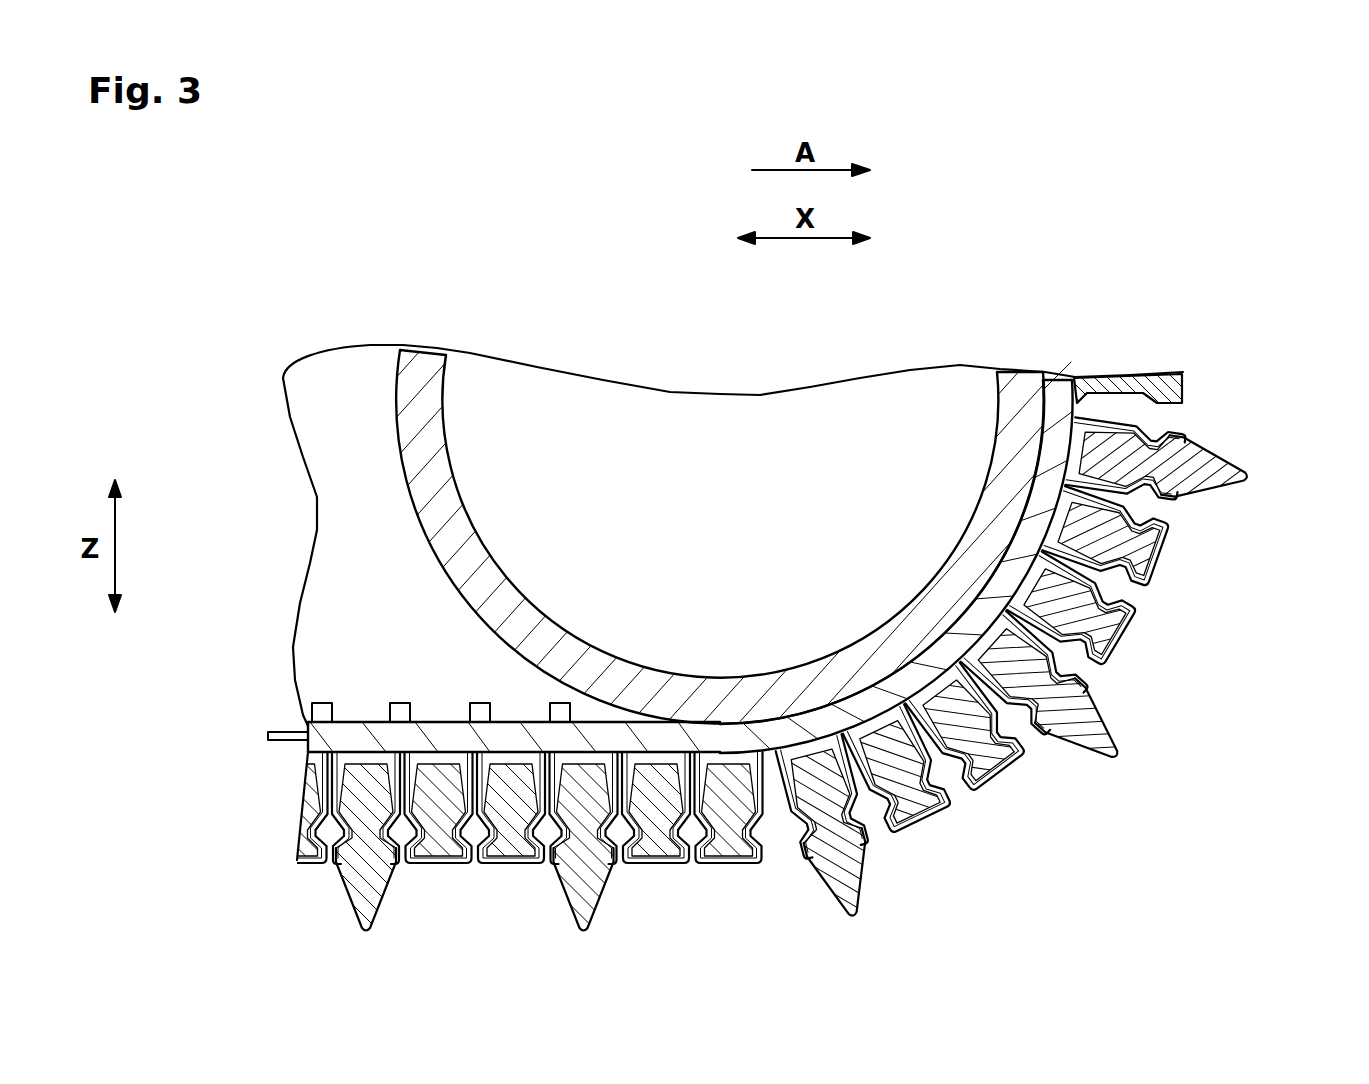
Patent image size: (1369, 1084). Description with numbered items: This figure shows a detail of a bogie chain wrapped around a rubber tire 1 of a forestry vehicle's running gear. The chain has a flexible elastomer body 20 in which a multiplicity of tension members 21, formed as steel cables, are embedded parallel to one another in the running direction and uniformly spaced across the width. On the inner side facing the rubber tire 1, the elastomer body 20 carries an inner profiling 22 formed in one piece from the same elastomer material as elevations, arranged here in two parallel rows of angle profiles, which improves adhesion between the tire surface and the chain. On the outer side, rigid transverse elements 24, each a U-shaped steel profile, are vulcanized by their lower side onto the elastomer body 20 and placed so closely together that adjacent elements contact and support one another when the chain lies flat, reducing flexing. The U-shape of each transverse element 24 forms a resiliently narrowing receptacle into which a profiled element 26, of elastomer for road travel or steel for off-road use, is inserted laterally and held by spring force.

The rubber tire 1 is at (940, 445).
The elastomer body 20 is at (1058, 388).
The tension member 21 is at (300, 728).
The inner profiling 22 is at (388, 697).
The rigid transverse element 24 is at (317, 778).
The profiled element 26 is at (1200, 480).